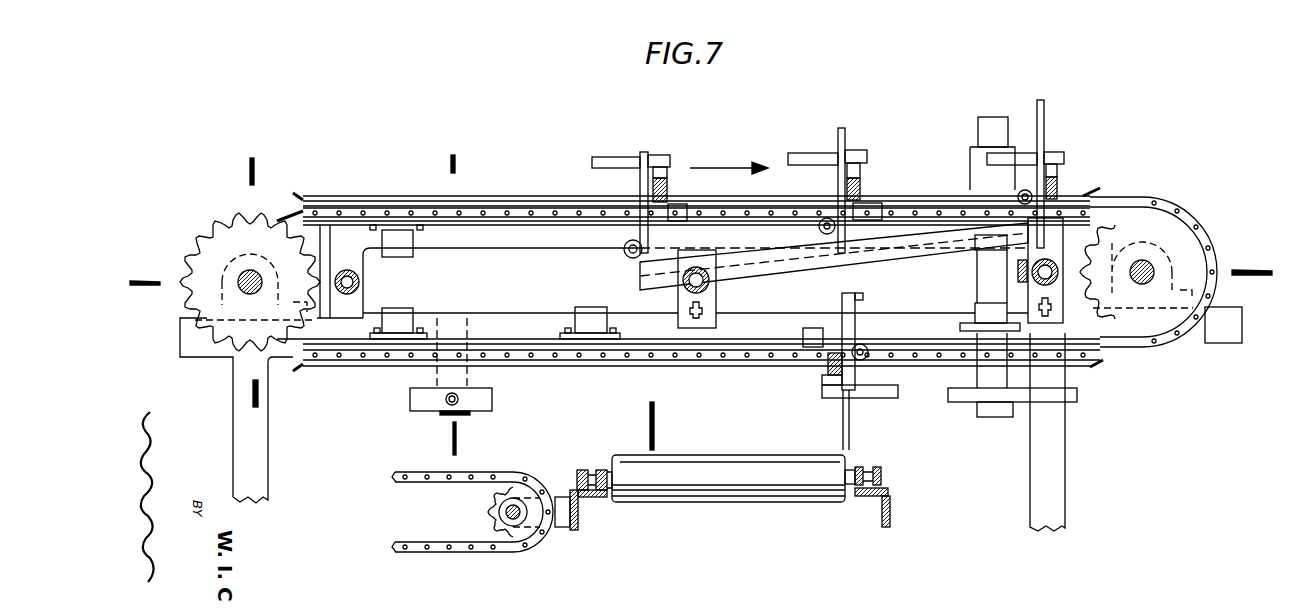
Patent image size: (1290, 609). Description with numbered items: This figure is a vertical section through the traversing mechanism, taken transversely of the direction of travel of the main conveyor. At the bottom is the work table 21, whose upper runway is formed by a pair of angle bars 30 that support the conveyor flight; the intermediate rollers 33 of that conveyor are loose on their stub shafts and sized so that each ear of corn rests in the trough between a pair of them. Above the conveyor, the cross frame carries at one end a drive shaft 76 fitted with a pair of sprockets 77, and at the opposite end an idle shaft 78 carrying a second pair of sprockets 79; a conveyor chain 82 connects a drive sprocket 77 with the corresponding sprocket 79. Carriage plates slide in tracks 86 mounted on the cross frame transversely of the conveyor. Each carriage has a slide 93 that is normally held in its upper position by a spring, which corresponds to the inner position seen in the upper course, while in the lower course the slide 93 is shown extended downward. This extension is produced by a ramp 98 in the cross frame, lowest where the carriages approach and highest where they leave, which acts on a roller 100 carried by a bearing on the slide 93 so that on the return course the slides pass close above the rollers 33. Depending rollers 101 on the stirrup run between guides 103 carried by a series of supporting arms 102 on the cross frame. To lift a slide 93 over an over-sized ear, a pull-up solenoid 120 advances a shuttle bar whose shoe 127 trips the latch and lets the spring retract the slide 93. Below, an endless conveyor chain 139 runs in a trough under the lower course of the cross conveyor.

The work table 21 is at (1054, 497).
The angle bars 30 is at (583, 529).
The intermediate rollers 33 is at (706, 480).
The drive shaft 76 is at (237, 285).
The sprockets 77 is at (212, 258).
The idle shaft 78 is at (1150, 271).
The sprockets 79 is at (1165, 238).
The conveyor chain 82 is at (1148, 198).
The tracks 86 is at (462, 210).
The slide 93 is at (1045, 126).
The ramp 98 is at (795, 258).
The roller 100 is at (633, 257).
The depending rollers 101 is at (682, 215).
The supporting arms 102 is at (405, 256).
The guide 103 is at (470, 219).
The pull-up solenoid 120 is at (995, 118).
The shoe 127 is at (1070, 395).
The endless conveyor chain 139 is at (470, 549).